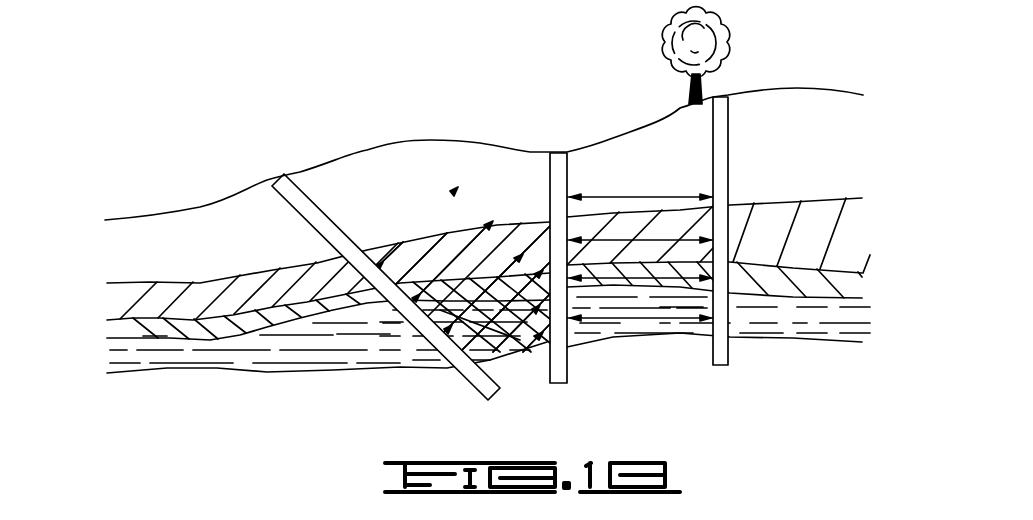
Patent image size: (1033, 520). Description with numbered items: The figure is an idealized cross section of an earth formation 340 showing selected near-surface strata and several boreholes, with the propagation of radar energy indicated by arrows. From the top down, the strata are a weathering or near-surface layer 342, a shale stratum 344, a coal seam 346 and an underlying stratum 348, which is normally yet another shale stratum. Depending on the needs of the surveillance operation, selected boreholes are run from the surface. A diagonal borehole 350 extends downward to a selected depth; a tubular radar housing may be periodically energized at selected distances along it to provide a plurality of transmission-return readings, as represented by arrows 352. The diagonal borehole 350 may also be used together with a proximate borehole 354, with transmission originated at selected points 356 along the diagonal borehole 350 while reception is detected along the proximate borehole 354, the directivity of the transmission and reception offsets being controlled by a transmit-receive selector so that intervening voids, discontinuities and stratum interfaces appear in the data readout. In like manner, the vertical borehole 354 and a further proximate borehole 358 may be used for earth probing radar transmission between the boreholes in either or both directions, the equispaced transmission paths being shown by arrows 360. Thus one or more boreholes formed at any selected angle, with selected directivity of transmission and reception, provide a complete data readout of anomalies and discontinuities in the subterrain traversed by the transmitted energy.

The earth formation 340 is at (522, 114).
The weathering or near-surface layer 342 is at (163, 232).
The shale stratum 344 is at (122, 300).
The coal seam 346 is at (122, 333).
The underlying stratum 348 is at (122, 357).
The diagonal borehole 350 is at (294, 194).
The arrows 352 is at (424, 212).
The proximate borehole 354 is at (553, 178).
The selected points 356 is at (480, 322).
The proximate borehole 358 is at (716, 135).
The arrows 360 is at (630, 192).